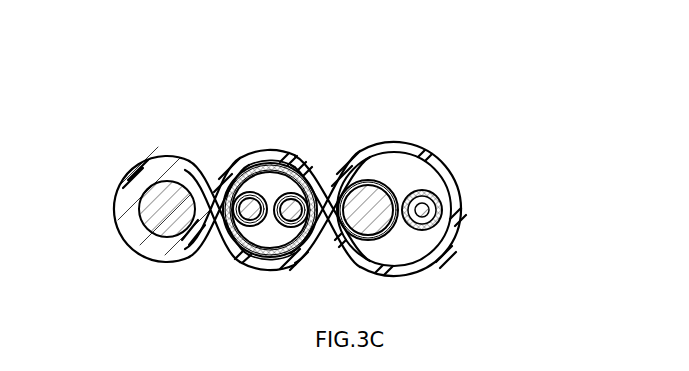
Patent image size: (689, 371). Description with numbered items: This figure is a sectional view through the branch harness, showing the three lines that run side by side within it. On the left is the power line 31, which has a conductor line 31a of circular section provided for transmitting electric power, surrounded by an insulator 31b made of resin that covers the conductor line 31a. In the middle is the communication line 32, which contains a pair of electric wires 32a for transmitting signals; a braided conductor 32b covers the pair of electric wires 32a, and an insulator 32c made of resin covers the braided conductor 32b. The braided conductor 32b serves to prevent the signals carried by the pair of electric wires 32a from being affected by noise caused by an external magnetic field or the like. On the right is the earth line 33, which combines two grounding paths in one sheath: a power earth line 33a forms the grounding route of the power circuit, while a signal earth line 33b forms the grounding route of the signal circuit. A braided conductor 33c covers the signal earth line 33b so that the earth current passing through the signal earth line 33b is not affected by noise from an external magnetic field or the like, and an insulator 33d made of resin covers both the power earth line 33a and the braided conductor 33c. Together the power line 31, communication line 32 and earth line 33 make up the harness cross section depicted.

The power line 31 is at (177, 65).
The conductor line 31a is at (152, 185).
The insulator 31b is at (157, 207).
The communication line 32 is at (355, 47).
The pair of electric wires 32a is at (283, 162).
The braided conductor 32b is at (285, 190).
The insulator 32c is at (304, 163).
The earth line 33 is at (580, 47).
The power earth line 33a is at (368, 190).
The insulator 33d is at (392, 187).
The signal earth line 33b is at (430, 193).
The braided conductor 33c is at (425, 207).